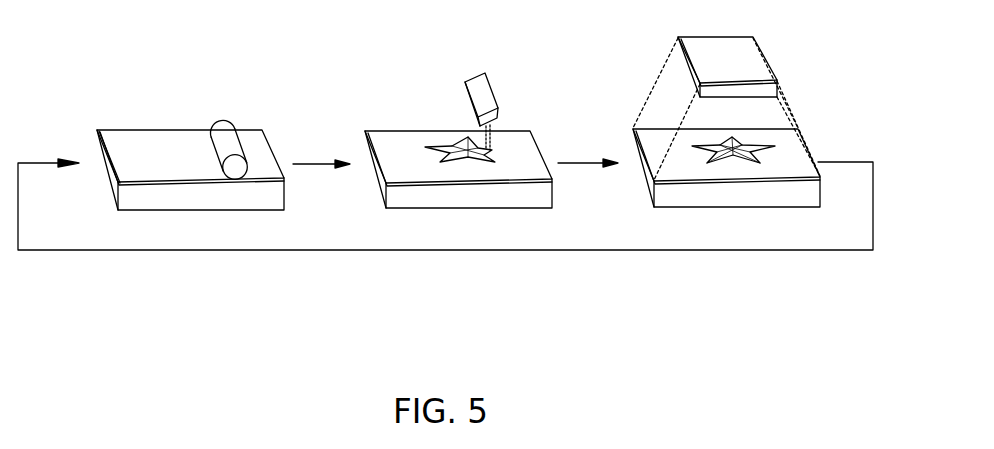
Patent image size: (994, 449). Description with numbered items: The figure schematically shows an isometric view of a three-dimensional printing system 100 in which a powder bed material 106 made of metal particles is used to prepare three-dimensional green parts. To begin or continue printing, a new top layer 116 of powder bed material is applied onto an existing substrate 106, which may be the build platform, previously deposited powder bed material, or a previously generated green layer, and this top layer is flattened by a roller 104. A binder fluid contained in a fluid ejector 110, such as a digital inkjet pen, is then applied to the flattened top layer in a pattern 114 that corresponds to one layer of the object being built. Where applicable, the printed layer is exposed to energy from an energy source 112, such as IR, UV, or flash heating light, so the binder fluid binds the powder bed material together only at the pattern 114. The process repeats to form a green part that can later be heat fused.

The three-dimensional printing system 100 is at (151, 60).
The roller 104 is at (223, 133).
The powder bed material / substrate 106 is at (185, 193).
The fluid ejector 110 is at (485, 96).
The energy source 112 is at (748, 69).
The pattern 114 is at (463, 143).
The top layer 116 is at (107, 157).